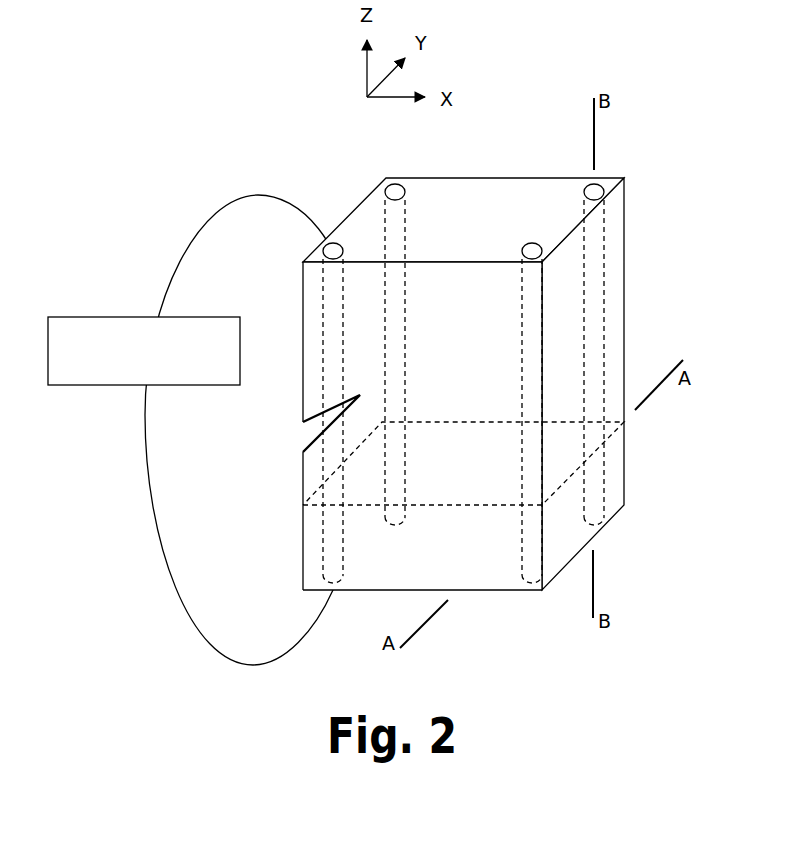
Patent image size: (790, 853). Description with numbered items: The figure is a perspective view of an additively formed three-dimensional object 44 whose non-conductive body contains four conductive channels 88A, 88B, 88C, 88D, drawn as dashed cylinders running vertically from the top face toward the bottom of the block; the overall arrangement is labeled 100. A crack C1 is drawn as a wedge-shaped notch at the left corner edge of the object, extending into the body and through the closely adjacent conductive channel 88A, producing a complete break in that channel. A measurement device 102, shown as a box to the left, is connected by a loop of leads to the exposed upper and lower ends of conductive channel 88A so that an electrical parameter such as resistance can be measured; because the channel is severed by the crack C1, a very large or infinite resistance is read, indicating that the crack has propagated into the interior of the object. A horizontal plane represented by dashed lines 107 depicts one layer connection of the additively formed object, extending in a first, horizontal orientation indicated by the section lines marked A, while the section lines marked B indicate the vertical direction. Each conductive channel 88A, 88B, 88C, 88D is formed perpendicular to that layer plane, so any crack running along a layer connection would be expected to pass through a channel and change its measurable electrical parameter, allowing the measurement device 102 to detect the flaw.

The system 100 is at (295, 101).
The measurement device 102 is at (88, 317).
The 3D object 44 is at (501, 170).
The conductive channel 88A is at (332, 543).
The conductive channel 88B is at (527, 535).
The conductive channel 88C is at (400, 237).
The conductive channel 88D is at (598, 290).
The section plane 107 is at (457, 505).
The crack C1 is at (288, 438).